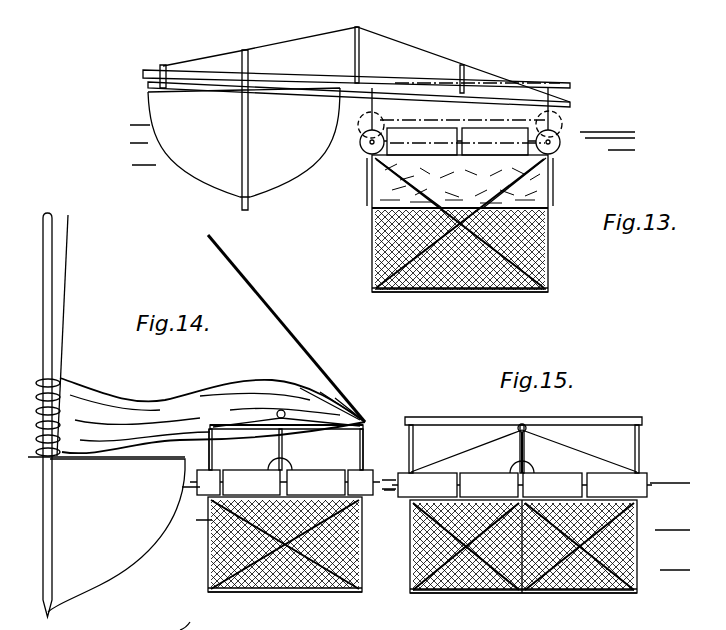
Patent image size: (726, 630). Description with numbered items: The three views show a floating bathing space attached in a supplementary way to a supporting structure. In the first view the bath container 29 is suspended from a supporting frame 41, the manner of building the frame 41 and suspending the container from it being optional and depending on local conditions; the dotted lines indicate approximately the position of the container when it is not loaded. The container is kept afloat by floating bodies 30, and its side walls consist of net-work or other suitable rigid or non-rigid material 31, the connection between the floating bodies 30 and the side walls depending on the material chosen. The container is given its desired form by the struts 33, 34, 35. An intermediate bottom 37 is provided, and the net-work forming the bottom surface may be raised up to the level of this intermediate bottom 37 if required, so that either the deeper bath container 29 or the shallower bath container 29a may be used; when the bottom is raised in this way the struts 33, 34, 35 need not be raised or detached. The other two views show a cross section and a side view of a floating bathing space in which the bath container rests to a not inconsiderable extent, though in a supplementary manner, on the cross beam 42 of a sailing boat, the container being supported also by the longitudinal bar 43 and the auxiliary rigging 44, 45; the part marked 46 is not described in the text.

In FIG. 13, the bath container 29 is at (550, 280).
In FIG. 14, the bath container 29 is at (208, 547).
In FIG. 15, the bath container 29 is at (630, 557).
In FIG. 13, the bath container 29a is at (370, 197).
In FIG. 13, the floating bodies 30 is at (556, 148).
In FIG. 14, the floating bodies 30 is at (335, 473).
In FIG. 15, the floating bodies 30 is at (556, 474).
In FIG. 13, the net-work or other suitable material 31 is at (552, 190).
In FIG. 13, the strut 33 is at (372, 250).
In FIG. 15, the strut 33 is at (640, 517).
In FIG. 13, the strut 34 is at (503, 292).
In FIG. 15, the strut 34 is at (576, 596).
In FIG. 13, the strut 35 is at (398, 284).
In FIG. 14, the strut 35 is at (208, 578).
In FIG. 15, the strut 35 is at (625, 581).
In FIG. 13, the intermediate bottom 37 is at (372, 222).
In FIG. 13, the supporting frame 41 is at (358, 72).
In FIG. 14, the cross beam 42 is at (325, 430).
In FIG. 15, the cross beam 42 is at (530, 431).
In FIG. 14, the longitudinal bar 43 is at (281, 410).
In FIG. 15, the longitudinal bar 43 is at (430, 417).
In FIG. 14, the auxiliary rigging 44 is at (213, 453).
In FIG. 15, the auxiliary rigging 45 is at (415, 447).
In FIG. 14, the line 46 is at (192, 629).